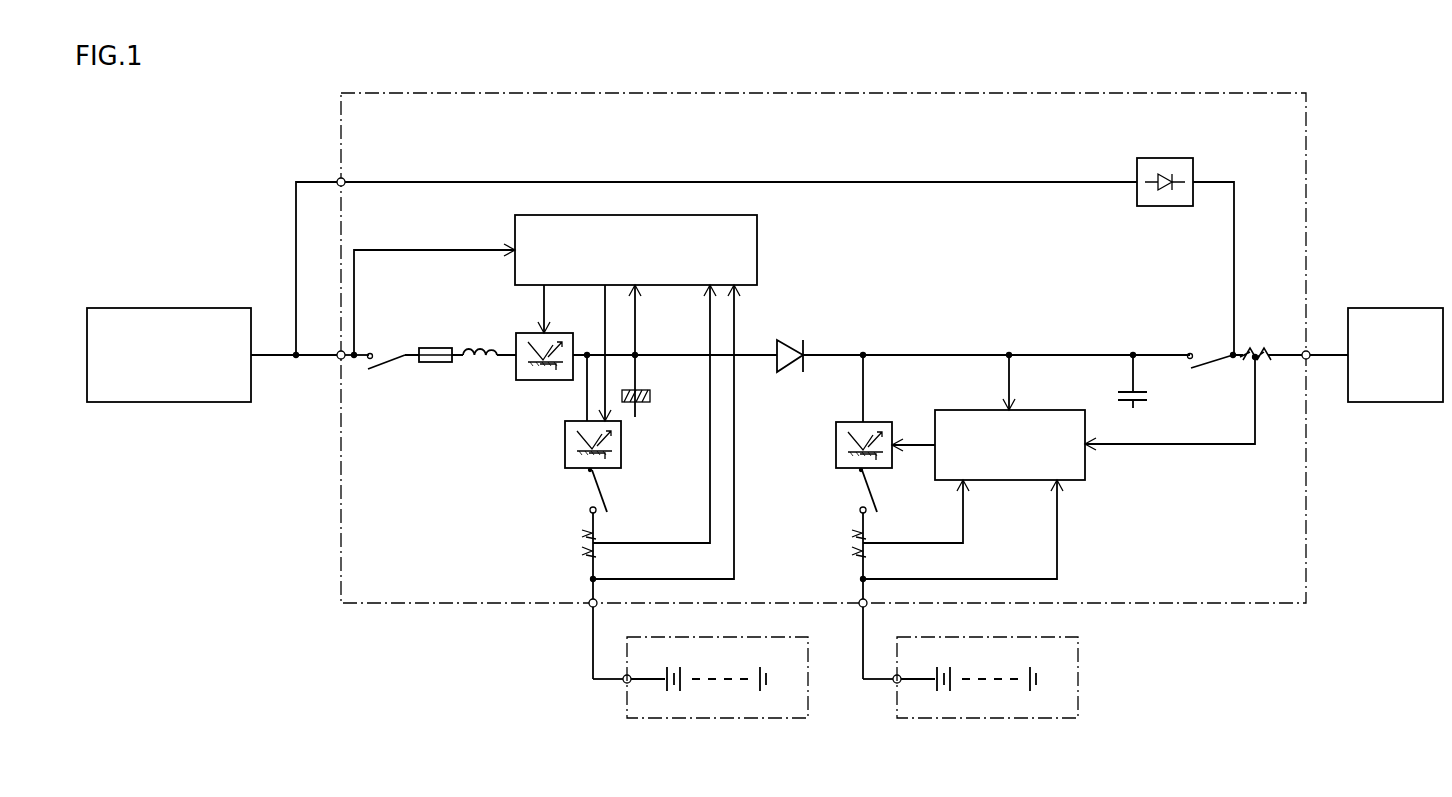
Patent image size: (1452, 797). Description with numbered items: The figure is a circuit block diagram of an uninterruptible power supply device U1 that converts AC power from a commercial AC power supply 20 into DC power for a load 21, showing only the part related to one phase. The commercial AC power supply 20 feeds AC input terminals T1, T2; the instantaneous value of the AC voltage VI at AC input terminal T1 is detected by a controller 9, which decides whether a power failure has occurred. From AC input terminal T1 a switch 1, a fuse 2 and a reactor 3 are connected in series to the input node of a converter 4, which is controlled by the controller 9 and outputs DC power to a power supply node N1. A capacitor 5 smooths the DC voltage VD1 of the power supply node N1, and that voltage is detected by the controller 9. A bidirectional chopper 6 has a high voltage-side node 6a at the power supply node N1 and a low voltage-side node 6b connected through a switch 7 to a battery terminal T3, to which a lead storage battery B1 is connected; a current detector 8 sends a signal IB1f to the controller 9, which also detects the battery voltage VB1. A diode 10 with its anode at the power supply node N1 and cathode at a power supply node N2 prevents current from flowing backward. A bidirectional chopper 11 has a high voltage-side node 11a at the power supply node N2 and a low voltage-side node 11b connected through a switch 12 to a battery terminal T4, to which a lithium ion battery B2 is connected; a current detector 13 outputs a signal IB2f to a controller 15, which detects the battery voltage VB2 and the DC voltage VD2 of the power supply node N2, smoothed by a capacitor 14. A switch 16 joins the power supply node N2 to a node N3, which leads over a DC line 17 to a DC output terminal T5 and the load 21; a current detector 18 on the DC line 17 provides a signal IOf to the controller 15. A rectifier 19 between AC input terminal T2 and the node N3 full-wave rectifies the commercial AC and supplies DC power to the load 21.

The switch 1 is at (385, 369).
The fuse 2 is at (436, 363).
The reactor 3 is at (483, 366).
The converter 4 is at (540, 381).
The capacitor 5 is at (651, 402).
The bidirectional chopper 6 is at (563, 445).
The high voltage-side node 6a is at (586, 419).
The low voltage-side node 6b is at (589, 471).
The switch 7 is at (606, 492).
The current detector 8 is at (589, 531).
The controller 9 is at (722, 214).
The diode 10 is at (785, 340).
The bidirectional chopper 11 is at (834, 445).
The high voltage-side node 11a is at (860, 420).
The low voltage-side node 11b is at (860, 471).
The switch 12 is at (878, 492).
The current detector 13 is at (860, 532).
The capacitor 14 is at (1130, 390).
The controller 15 is at (1038, 410).
The switch 16 is at (1200, 366).
The DC line 17 is at (1288, 360).
The current detector 18 is at (1262, 350).
The rectifier 19 is at (1170, 158).
The commercial AC power supply 20 is at (208, 308).
The load 21 is at (1395, 310).
The AC input terminal T1 is at (338, 359).
The AC input terminal T2 is at (338, 179).
The battery terminal T3 is at (588, 607).
The battery terminal T4 is at (858, 607).
The DC output terminal T5 is at (1308, 350).
The power supply node N1 is at (638, 360).
The power supply node N2 is at (863, 348).
The node N3 is at (1230, 353).
The lead storage battery B1 is at (625, 700).
The lithium ion battery B2 is at (895, 700).
The uninterruptible power supply device U1 is at (1262, 93).
The AC voltage VI is at (415, 249).
The DC voltage VD1 is at (639, 322).
The DC voltage VD2 is at (1005, 383).
The signal IB1f is at (625, 543).
The signal IB2f is at (890, 543).
The voltage VB1 is at (625, 579).
The voltage VB2 is at (887, 579).
The signal IOf is at (1186, 450).